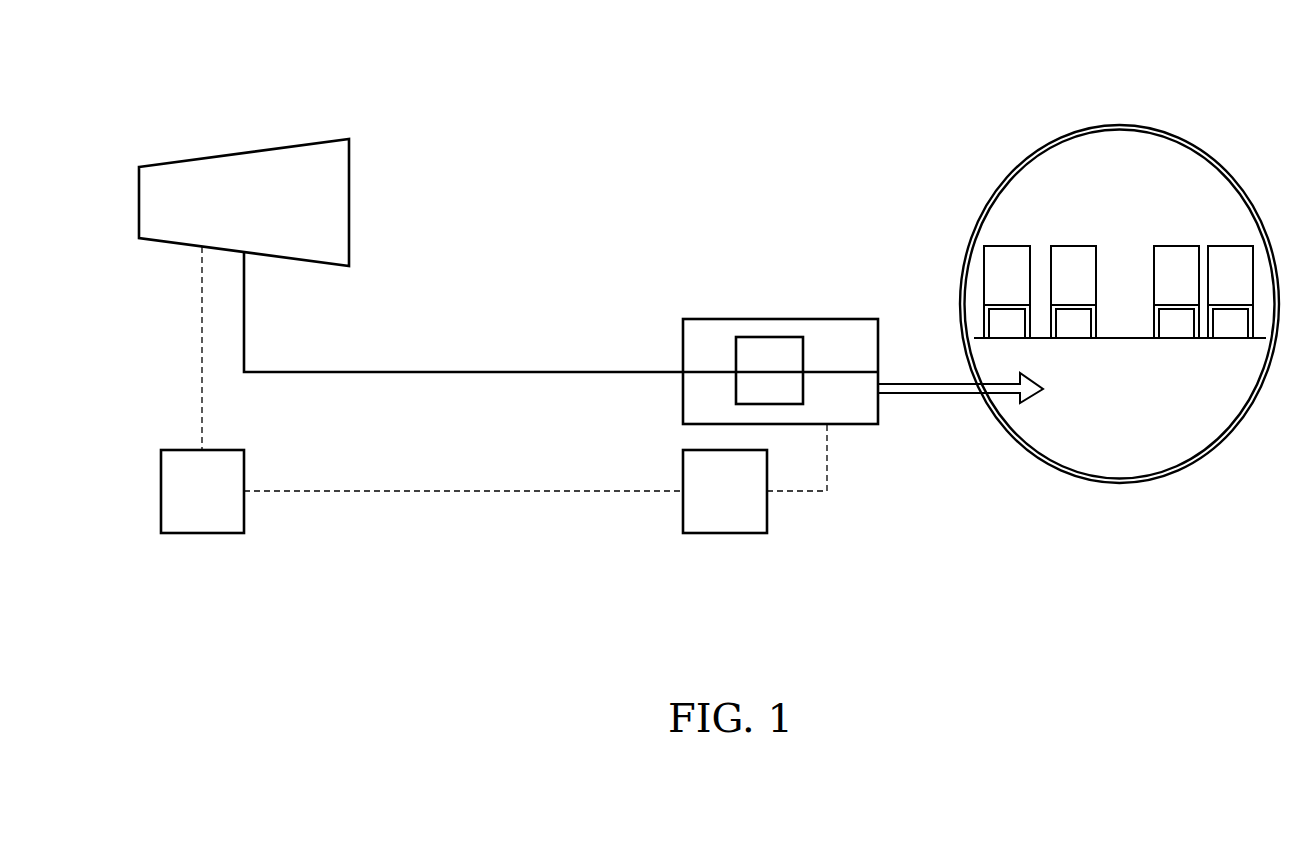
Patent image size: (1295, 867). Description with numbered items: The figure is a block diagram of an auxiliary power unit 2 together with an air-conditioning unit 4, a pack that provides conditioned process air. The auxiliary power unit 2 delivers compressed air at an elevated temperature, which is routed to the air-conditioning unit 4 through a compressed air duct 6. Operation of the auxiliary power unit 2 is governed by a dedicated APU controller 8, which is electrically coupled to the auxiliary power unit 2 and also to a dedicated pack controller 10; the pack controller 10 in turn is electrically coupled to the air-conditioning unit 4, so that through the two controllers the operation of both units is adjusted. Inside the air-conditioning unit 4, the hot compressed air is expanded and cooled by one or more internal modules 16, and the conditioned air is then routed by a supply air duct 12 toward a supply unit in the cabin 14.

The auxiliary power unit 2 is at (279, 130).
The air-conditioning unit 4 is at (834, 305).
The compressed air duct 6 is at (471, 370).
The APU controller 8 is at (177, 497).
The pack controller 10 is at (725, 509).
The supply air duct 12 is at (925, 398).
The cabin 14 is at (1128, 164).
The internal module 16 is at (800, 387).